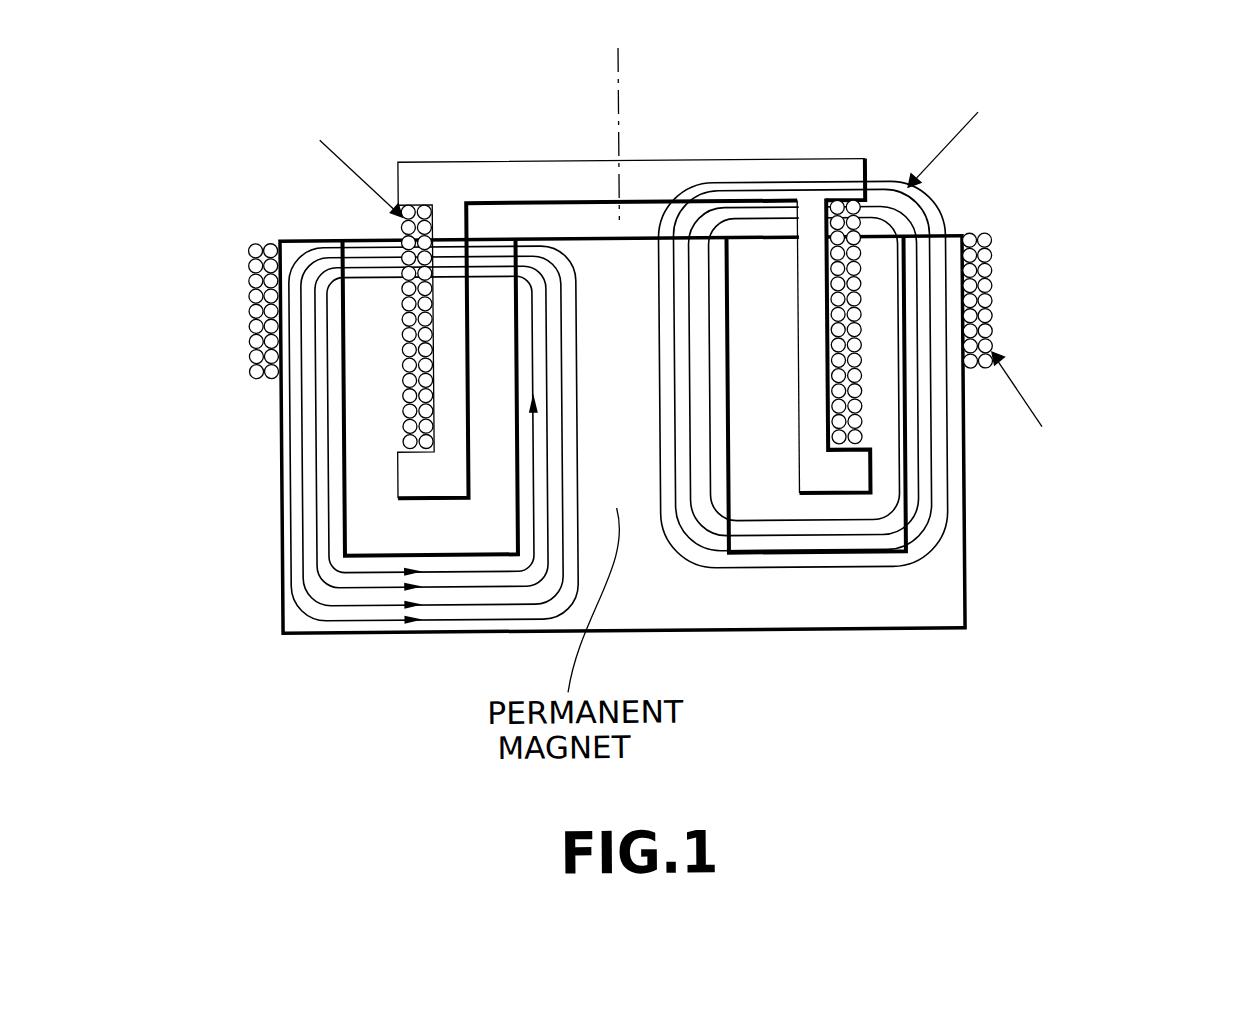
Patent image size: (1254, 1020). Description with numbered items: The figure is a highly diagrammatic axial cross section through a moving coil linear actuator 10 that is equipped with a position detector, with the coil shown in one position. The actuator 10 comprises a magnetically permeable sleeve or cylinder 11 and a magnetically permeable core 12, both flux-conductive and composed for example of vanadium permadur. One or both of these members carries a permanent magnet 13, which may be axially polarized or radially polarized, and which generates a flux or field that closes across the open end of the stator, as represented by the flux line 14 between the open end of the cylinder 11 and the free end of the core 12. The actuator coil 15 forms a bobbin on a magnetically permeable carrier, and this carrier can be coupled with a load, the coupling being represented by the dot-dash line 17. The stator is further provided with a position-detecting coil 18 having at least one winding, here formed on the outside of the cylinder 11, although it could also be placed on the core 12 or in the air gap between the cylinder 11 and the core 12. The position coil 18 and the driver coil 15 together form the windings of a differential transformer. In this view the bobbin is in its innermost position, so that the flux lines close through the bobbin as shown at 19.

The moving coil linear actuator 10 is at (545, 472).
The magnetically permeable sleeve or cylinder 11 is at (281, 537).
The magnetically permeable core 12 is at (656, 530).
The permanent magnet 13 is at (633, 367).
The flux line 14 is at (352, 238).
The actuator coil 15 is at (407, 406).
The dot-dash line 17 is at (621, 75).
The position-detecting coil 18 is at (998, 263).
The flux lines through the bobbin 19 is at (935, 210).